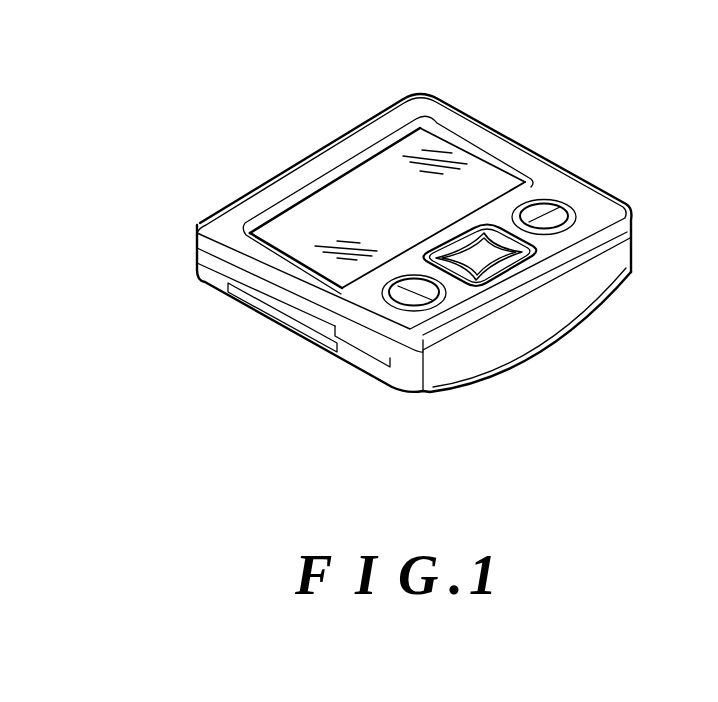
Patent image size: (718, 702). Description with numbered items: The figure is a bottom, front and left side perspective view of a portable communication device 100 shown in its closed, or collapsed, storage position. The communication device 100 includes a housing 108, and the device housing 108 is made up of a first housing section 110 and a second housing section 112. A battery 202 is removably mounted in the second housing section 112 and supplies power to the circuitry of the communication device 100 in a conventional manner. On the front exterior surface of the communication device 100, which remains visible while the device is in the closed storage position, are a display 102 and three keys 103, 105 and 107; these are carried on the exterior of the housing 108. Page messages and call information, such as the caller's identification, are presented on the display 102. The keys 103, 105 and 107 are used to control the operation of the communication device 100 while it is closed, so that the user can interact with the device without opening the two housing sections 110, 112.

The communication device 100 is at (464, 86).
The display 102 is at (393, 157).
The key 103 is at (557, 212).
The key 105 is at (402, 299).
The key 107 is at (482, 258).
The housing 108 is at (176, 240).
The first housing section 110 is at (540, 160).
The second housing section 112 is at (443, 375).
The battery 202 is at (273, 320).